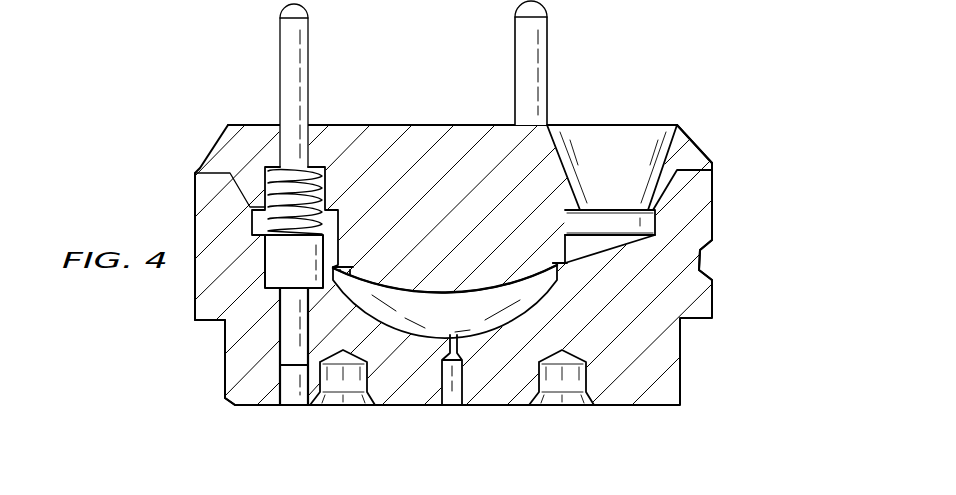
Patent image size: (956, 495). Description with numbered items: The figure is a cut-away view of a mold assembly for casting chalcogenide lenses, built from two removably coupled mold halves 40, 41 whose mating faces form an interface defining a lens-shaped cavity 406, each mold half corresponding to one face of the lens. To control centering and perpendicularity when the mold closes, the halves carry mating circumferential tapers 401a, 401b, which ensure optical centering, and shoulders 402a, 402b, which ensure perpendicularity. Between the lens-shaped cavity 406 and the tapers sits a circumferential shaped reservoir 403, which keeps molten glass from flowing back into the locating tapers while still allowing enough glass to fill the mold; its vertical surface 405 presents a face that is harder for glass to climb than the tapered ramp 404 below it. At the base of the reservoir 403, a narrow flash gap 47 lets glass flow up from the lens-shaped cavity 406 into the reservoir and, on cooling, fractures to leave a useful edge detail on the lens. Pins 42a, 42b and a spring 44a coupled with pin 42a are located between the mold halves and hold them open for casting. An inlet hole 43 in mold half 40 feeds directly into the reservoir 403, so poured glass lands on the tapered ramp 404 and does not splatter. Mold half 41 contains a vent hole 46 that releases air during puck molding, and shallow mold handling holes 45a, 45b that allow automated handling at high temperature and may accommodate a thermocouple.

The mold half 40 is at (378, 125).
The mold half 41 is at (225, 360).
The pin 42a is at (283, 58).
The pin 42b is at (545, 58).
The inlet hole 43 is at (686, 58).
The spring 44a is at (266, 182).
The mold handling hole 45a is at (344, 414).
The mold handling hole 45b is at (564, 416).
The vent hole 46 is at (457, 416).
The flash gap 47 is at (565, 252).
The circumferential taper 401a is at (652, 165).
The circumferential taper 401b is at (706, 250).
The shoulder 402a is at (698, 160).
The shoulder 402b is at (715, 176).
The shaped reservoir 403 is at (610, 220).
The tapered ramp 404 is at (603, 248).
The vertical surface 405 is at (640, 240).
The lens-shaped cavity 406 is at (433, 325).